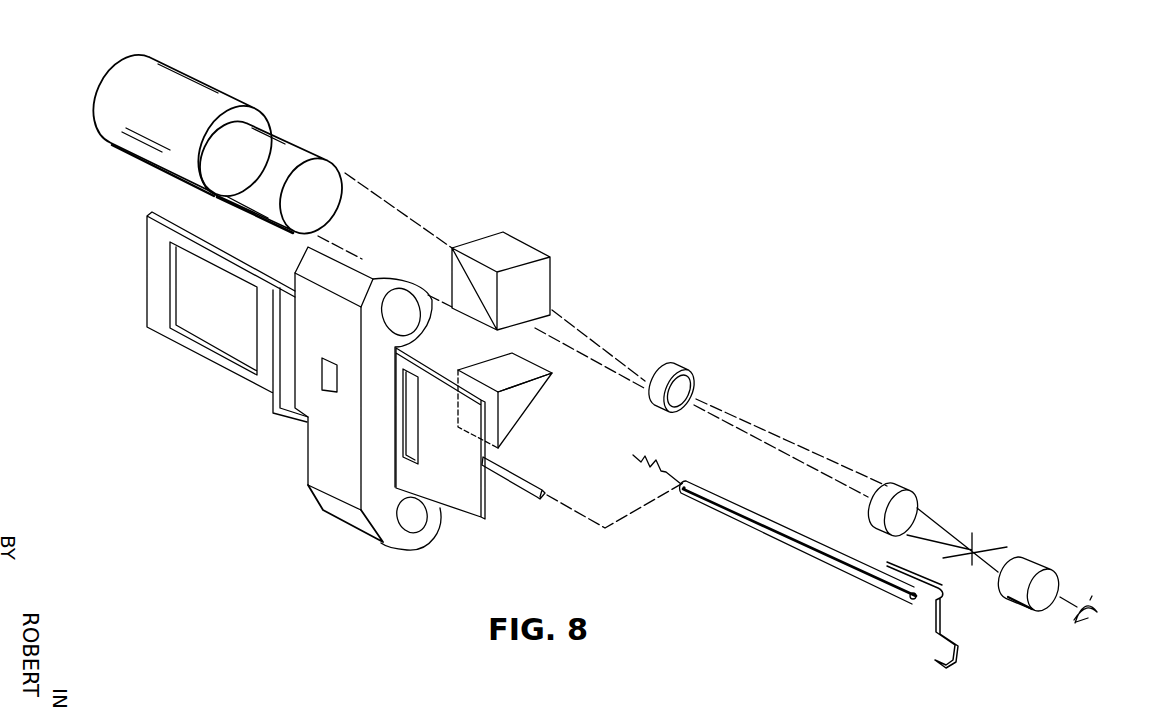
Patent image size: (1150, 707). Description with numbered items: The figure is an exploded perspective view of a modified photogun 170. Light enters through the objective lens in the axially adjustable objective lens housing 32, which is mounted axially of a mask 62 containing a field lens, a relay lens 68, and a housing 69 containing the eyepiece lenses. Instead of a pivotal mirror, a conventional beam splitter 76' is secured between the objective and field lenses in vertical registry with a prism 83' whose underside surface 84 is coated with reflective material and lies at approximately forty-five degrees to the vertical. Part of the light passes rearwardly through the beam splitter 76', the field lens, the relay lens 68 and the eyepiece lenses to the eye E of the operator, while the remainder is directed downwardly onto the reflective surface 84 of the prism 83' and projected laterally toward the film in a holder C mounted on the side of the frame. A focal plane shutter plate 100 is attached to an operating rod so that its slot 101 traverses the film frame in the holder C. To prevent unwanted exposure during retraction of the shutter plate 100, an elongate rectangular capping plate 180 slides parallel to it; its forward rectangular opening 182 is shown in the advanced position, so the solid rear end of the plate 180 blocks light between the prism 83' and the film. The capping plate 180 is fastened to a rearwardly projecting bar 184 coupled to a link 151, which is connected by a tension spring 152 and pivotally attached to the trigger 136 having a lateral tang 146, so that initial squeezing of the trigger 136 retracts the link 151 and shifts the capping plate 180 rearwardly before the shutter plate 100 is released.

The objective lens housing 32 is at (218, 92).
The modified photogun 170 is at (523, 208).
The beam splitter 76' is at (520, 273).
The capping plate 180 is at (147, 275).
The rectangular opening 182 is at (225, 355).
The film holder C is at (305, 458).
The focal plane shutter plate 100 is at (463, 497).
The slot 101 is at (412, 455).
The bar 184 is at (528, 490).
The prism 83' is at (523, 400).
The reflective surface 84 is at (518, 427).
The mask 62 is at (676, 372).
The relay lens 68 is at (897, 490).
The eyepiece housing 69 is at (1027, 565).
The eye E is at (1097, 612).
The tension spring 152 is at (668, 462).
The link 151 is at (806, 556).
The tang 146 is at (910, 600).
The trigger 136 is at (925, 633).